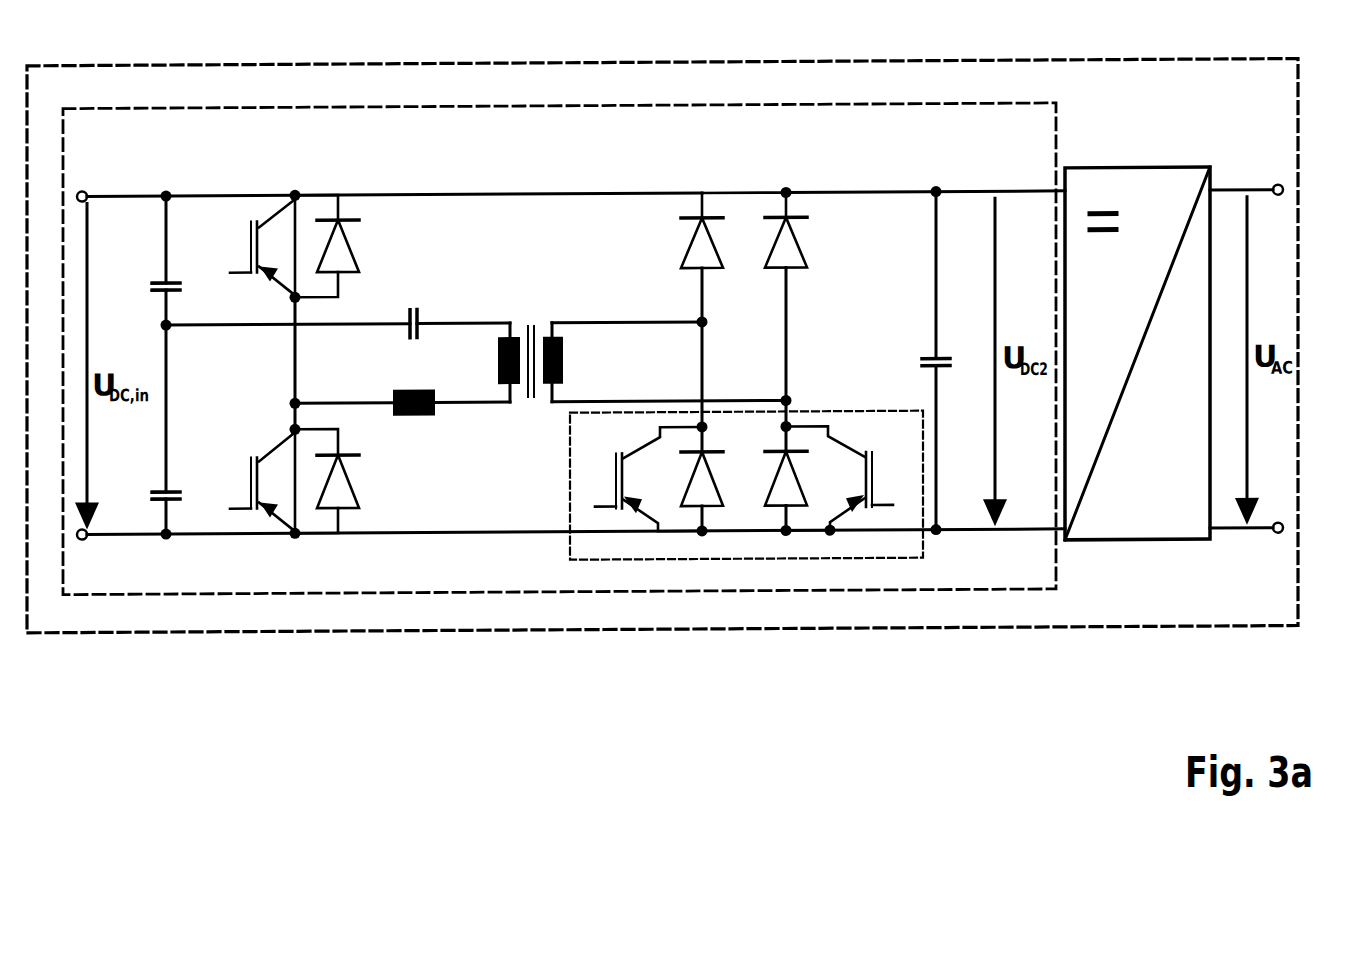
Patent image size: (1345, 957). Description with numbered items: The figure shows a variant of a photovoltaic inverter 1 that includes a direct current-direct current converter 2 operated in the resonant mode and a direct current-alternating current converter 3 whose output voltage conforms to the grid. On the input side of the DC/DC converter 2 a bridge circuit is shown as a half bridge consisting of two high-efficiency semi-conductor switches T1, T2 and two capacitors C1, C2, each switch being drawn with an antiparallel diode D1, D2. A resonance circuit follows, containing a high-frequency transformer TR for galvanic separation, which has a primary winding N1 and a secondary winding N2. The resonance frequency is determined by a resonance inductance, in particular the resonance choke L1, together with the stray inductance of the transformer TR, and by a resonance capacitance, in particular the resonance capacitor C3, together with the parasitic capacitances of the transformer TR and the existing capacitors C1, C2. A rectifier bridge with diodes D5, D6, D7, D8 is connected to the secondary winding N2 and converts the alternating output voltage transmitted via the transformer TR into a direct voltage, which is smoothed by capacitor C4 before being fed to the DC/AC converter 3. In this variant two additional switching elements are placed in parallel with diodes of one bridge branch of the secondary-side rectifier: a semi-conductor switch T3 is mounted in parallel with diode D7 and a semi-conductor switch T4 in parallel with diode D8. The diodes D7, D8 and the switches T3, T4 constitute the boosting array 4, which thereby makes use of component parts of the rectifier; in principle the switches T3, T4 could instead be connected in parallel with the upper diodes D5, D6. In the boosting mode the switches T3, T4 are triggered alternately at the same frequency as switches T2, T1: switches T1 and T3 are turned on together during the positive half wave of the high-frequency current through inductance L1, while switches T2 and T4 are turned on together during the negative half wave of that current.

The photovoltaic inverter 1 is at (1267, 67).
The DC/DC converter 2 is at (658, 110).
The DC/AC converter 3 is at (1165, 202).
The boosting array 4 is at (691, 486).
The capacitor C1 is at (147, 260).
The capacitor C2 is at (147, 429).
The resonance capacitor C3 is at (411, 304).
The intermediate circuit capacitor C4 is at (917, 361).
The semi-conductor switch T1 is at (253, 481).
The semi-conductor switch T2 is at (253, 246).
The semi-conductor switch T3 is at (638, 479).
The semi-conductor switch T4 is at (850, 478).
The diode D1 is at (345, 481).
The diode D2 is at (346, 246).
The diode D5 is at (683, 322).
The diode D6 is at (773, 322).
The diode D7 is at (716, 491).
The diode D8 is at (805, 490).
The resonance choke L1 is at (402, 387).
The HF transformer TR is at (534, 305).
The primary winding N1 is at (493, 362).
The secondary winding N2 is at (572, 362).